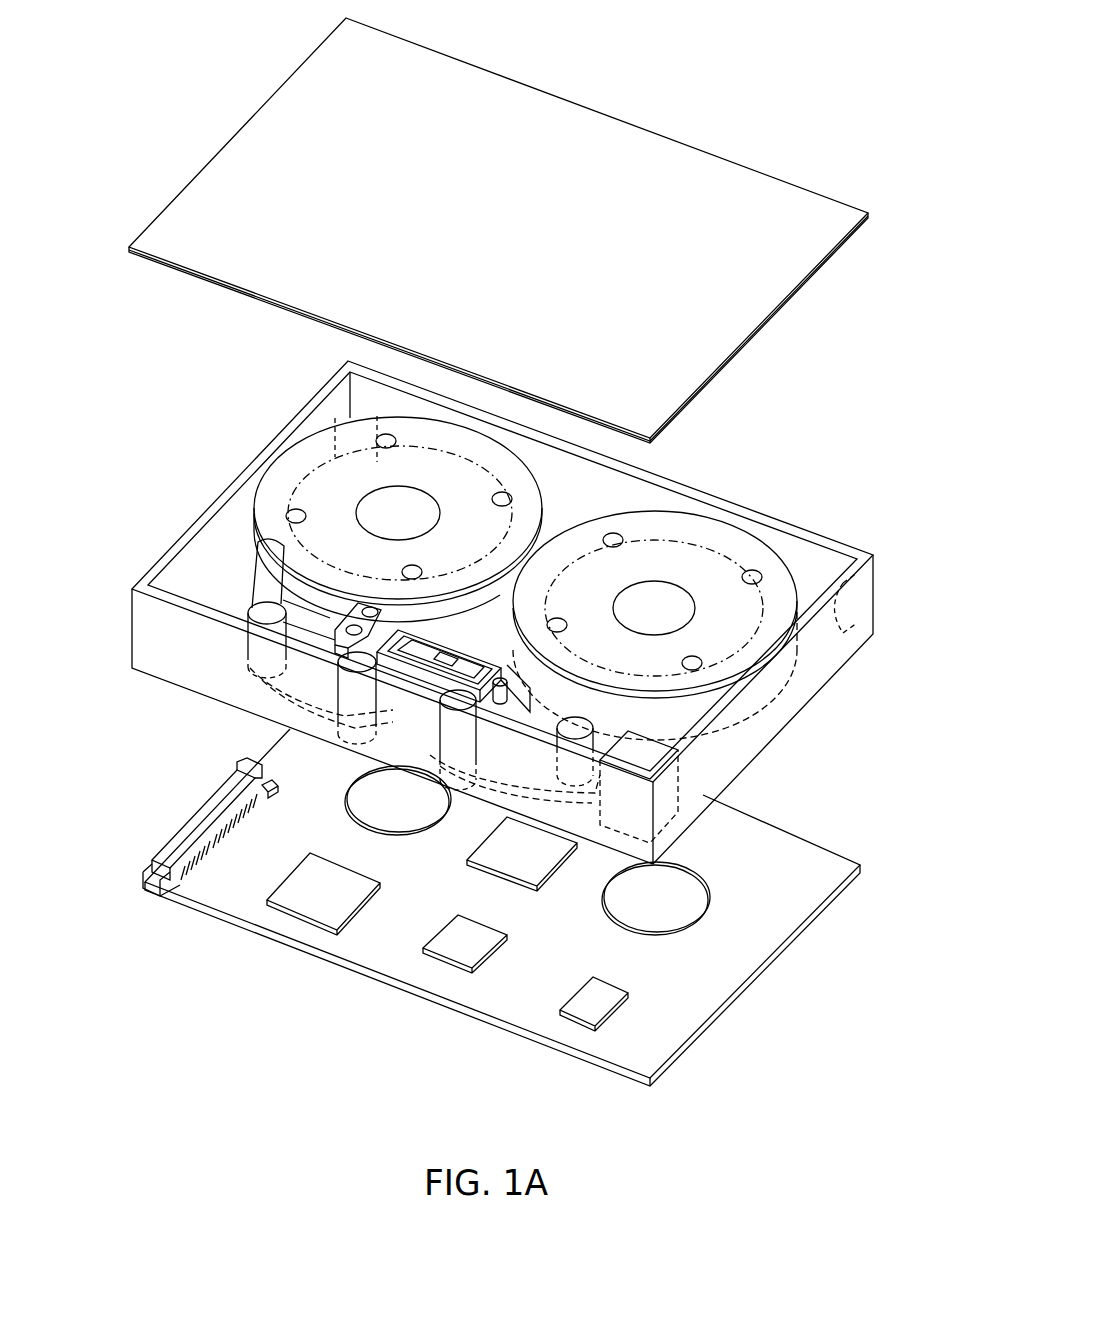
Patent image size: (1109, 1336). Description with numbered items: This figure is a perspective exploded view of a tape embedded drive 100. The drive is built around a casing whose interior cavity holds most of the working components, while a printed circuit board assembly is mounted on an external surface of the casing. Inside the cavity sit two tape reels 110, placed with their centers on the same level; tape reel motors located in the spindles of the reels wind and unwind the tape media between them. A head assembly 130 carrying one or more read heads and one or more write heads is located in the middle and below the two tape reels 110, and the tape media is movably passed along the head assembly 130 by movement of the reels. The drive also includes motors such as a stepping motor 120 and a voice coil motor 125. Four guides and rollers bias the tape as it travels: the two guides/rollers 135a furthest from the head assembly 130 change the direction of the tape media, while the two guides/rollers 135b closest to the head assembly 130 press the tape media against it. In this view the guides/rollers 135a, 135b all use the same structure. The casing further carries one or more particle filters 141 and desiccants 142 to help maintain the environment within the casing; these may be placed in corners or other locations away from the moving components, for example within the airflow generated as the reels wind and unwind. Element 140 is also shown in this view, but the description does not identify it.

The tape embedded drive 100 is at (773, 75).
The tape reels 110 is at (455, 425).
The stepping motor 120 is at (320, 628).
The voice coil motor 125 is at (415, 653).
The head assembly 130 is at (415, 653).
The guides/rollers 135a is at (262, 610).
The guides/rollers 135b is at (350, 658).
The spindle motor hub 140 is at (370, 497).
The particle filters 141 is at (873, 630).
The desiccants 142 is at (665, 800).